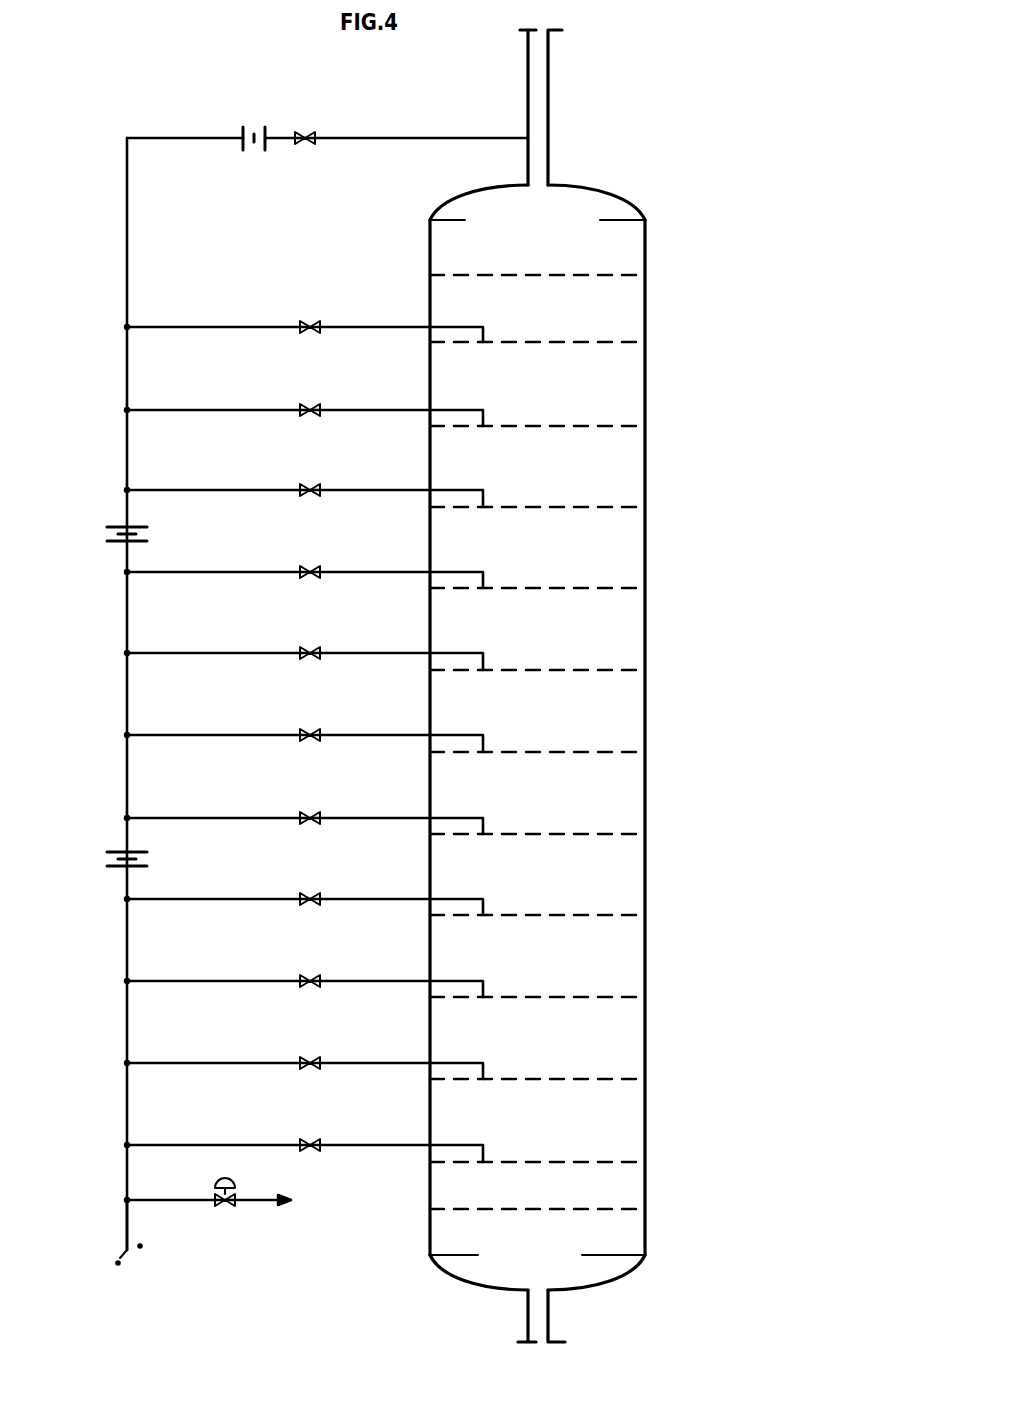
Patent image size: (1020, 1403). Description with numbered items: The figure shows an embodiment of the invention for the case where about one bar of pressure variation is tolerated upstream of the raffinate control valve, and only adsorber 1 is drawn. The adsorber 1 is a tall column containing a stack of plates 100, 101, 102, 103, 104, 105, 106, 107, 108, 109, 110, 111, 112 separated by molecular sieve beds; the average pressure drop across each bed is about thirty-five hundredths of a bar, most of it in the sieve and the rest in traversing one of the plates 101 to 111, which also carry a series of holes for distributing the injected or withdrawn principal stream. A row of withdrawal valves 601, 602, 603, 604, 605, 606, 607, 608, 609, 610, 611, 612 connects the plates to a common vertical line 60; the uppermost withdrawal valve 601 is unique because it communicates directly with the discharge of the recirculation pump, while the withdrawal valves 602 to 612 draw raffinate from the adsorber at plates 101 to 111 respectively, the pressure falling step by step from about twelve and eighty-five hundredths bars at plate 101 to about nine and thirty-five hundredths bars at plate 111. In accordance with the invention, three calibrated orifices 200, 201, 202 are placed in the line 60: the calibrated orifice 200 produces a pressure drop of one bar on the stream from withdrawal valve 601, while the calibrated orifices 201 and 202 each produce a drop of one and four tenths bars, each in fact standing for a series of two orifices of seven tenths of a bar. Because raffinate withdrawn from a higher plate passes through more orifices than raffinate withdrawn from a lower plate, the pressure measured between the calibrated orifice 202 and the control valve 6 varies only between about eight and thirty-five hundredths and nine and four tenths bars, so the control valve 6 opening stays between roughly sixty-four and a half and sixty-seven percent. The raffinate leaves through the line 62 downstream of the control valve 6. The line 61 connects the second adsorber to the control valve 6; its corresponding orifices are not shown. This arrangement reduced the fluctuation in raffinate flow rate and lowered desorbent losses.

The adsorber 1 is at (668, 160).
The control valve 6 is at (231, 1206).
The line 60 is at (127, 258).
The line 61 is at (127, 1230).
The discharge line 62 is at (189, 1203).
The column stage 100 is at (637, 275).
The plate 101 is at (611, 342).
The plate 102 is at (611, 426).
The plate 103 is at (611, 507).
The plate 104 is at (611, 588).
The plate 105 is at (611, 670).
The plate 106 is at (611, 752).
The plate 107 is at (611, 834).
The plate 108 is at (611, 915).
The plate 109 is at (611, 997).
The plate 110 is at (611, 1079).
The plate 111 is at (611, 1162).
The column stage 112 is at (611, 1209).
The calibrated orifice 200 is at (243, 130).
The calibrated orifice 201 is at (168, 514).
The calibrated orifice 202 is at (167, 840).
The withdrawal valve 601 is at (305, 130).
The withdrawal valve 602 is at (310, 320).
The withdrawal valve 603 is at (310, 403).
The withdrawal valve 604 is at (310, 483).
The withdrawal valve 605 is at (310, 565).
The withdrawal valve 606 is at (310, 646).
The withdrawal valve 607 is at (310, 728).
The withdrawal valve 608 is at (310, 811).
The withdrawal valve 609 is at (310, 892).
The withdrawal valve 610 is at (310, 974).
The withdrawal valve 611 is at (310, 1056).
The withdrawal valve 612 is at (310, 1138).